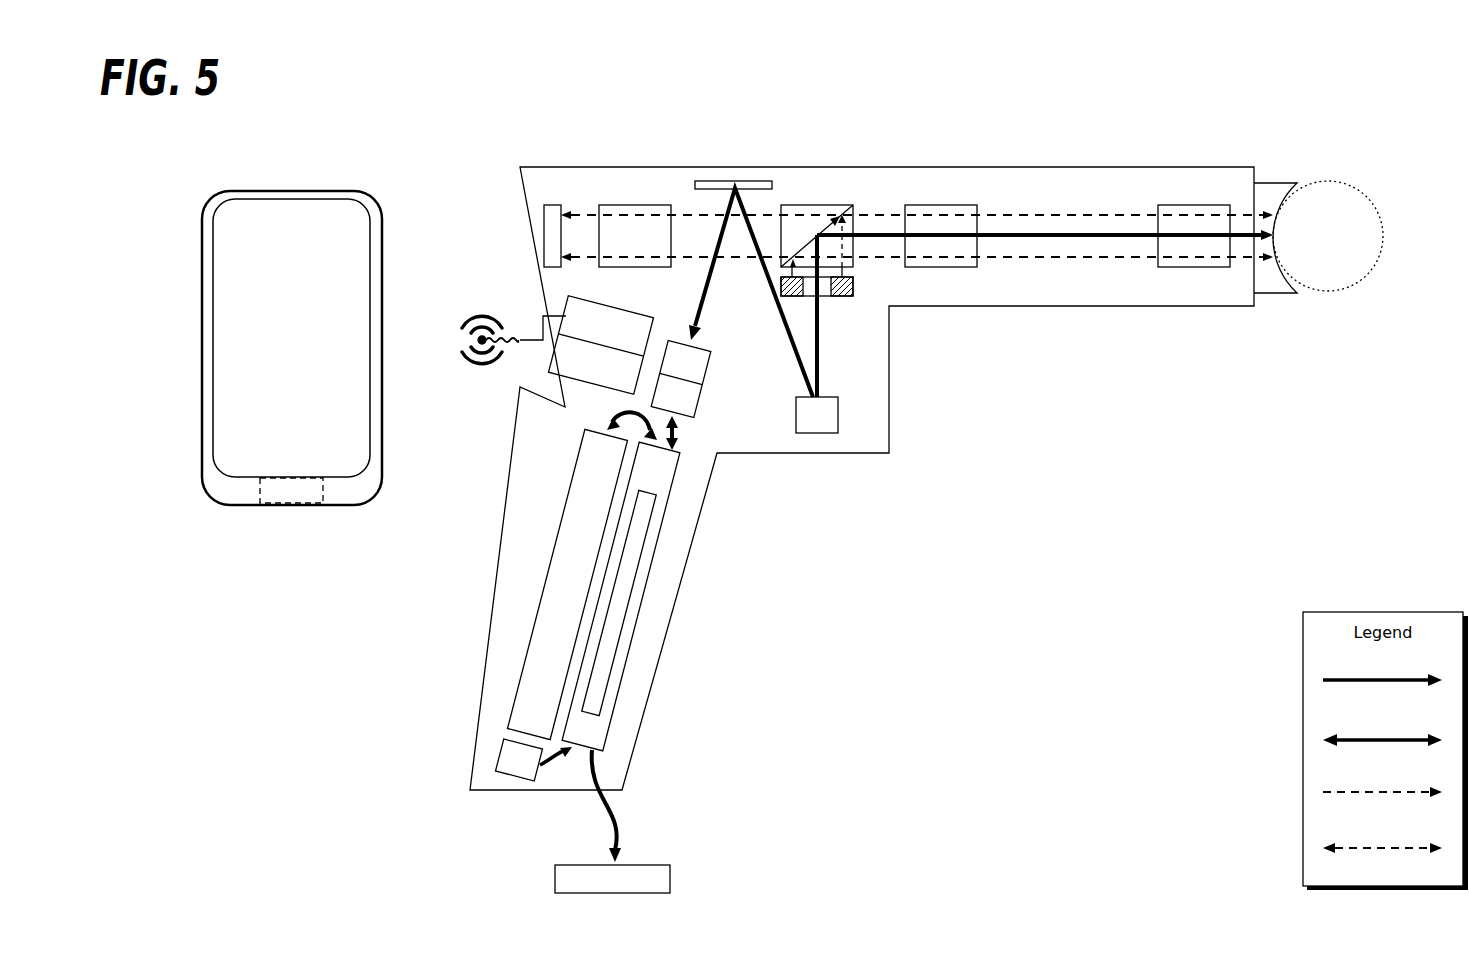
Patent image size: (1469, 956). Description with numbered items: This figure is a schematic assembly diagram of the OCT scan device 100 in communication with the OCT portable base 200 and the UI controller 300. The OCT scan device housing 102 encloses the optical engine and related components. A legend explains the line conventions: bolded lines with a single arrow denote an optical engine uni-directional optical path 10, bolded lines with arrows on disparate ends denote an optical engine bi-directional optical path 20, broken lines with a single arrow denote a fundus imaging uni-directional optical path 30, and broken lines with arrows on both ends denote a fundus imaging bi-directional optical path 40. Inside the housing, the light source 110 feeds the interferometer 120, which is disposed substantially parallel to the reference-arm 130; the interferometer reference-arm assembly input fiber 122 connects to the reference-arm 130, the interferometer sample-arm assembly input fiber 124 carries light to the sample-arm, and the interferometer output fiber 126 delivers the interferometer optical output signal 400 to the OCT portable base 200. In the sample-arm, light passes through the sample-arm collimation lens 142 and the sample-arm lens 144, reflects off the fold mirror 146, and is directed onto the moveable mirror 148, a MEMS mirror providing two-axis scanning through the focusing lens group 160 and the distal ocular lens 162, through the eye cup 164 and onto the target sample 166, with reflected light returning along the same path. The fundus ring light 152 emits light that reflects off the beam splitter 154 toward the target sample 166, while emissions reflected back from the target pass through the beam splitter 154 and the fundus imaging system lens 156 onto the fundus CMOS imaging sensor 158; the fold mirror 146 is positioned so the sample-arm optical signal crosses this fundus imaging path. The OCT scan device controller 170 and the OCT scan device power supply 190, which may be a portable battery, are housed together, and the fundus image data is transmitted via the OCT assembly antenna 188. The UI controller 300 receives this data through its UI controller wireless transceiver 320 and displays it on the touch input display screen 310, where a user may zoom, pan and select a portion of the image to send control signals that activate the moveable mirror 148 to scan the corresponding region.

The optical engine uni-directional optical path 10 is at (1380, 680).
The optical engine bi-directional optical path 20 is at (1380, 740).
The fundus imaging uni-directional optical path 30 is at (1380, 792).
The fundus imaging bi-directional optical path 40 is at (1380, 848).
The OCT scan device 100 is at (862, 454).
The OCT scan device housing 102 is at (600, 167).
The light source 110 is at (534, 760).
The interferometer 120 is at (645, 598).
The interferometer reference-arm assembly input fiber 122 is at (618, 415).
The interferometer sample-arm assembly input fiber 124 is at (677, 425).
The interferometer output fiber 126 is at (593, 763).
The reference-arm 130 is at (541, 598).
The sample-arm collimation lens 142 is at (677, 396).
The sample-arm lens 144 is at (681, 379).
The fold mirror 146 is at (745, 181).
The moveable mirror 148 is at (816, 415).
The fundus ring light 152 is at (840, 297).
The beam splitter 154 is at (803, 205).
The fundus imaging system lens 156 is at (635, 236).
The fundus CMOS imaging sensor 158 is at (544, 230).
The focusing lens group 160 is at (920, 205).
The distal ocular lens 162 is at (1175, 205).
The eye cup 164 is at (1265, 293).
The target sample 166 is at (1328, 236).
The OCT scan device controller 170 is at (601, 345).
The OCT assembly antenna 188 is at (470, 338).
The OCT scan device power supply 190 is at (595, 365).
The OCT portable base 200 is at (612, 879).
The UI controller 300 is at (323, 357).
The touch input display screen 310 is at (342, 423).
The UI controller wireless transceiver 320 is at (323, 503).
The interferometer optical output signal 400 is at (613, 830).